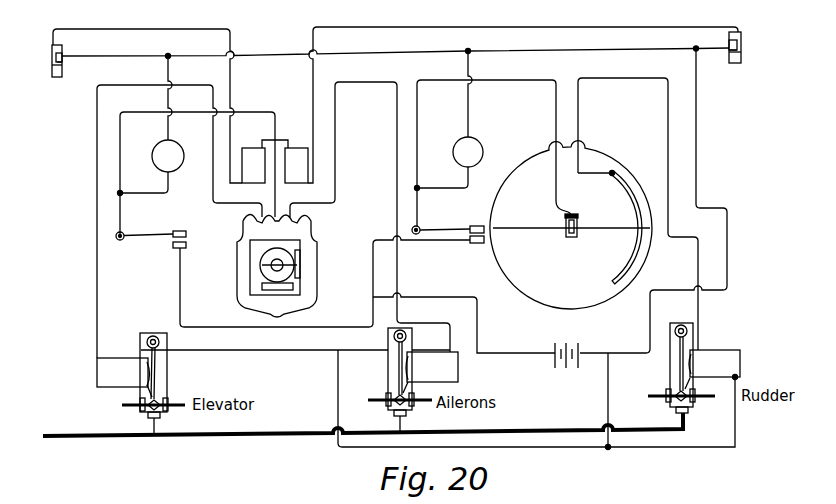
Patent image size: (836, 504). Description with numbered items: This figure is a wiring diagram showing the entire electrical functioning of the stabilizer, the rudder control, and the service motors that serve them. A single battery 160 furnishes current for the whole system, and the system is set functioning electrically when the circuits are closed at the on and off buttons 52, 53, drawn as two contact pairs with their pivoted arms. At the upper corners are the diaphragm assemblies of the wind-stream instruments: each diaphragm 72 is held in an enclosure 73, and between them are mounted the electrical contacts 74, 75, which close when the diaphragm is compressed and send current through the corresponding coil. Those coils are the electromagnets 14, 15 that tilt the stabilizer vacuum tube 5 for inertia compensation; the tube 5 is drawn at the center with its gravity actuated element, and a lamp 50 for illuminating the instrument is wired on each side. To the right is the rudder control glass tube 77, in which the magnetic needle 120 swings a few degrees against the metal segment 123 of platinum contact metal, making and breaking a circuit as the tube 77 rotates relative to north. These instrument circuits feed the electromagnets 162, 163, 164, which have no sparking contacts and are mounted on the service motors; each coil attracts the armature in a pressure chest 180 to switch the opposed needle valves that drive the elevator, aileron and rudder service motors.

The vacuum tube 5 is at (318, 278).
The electromagnet 14 is at (253, 165).
The electromagnet 15 is at (296, 165).
The lamp 50 is at (301, 123).
The on button 52 is at (300, 223).
The off button 53 is at (178, 231).
The diaphragm 72 is at (52, 60).
The enclosure 73 is at (62, 57).
The electrical contact 74 is at (52, 68).
The electrical contact 75 is at (62, 62).
The glass tube 77 is at (533, 300).
The magnetic needle 120 is at (523, 236).
The metal segment 123 is at (637, 185).
The battery 160 is at (571, 375).
The electromagnet 162 is at (123, 372).
The electromagnet 163 is at (432, 367).
The electromagnet 164 is at (714, 363).
The pressure chest 180 is at (168, 372).